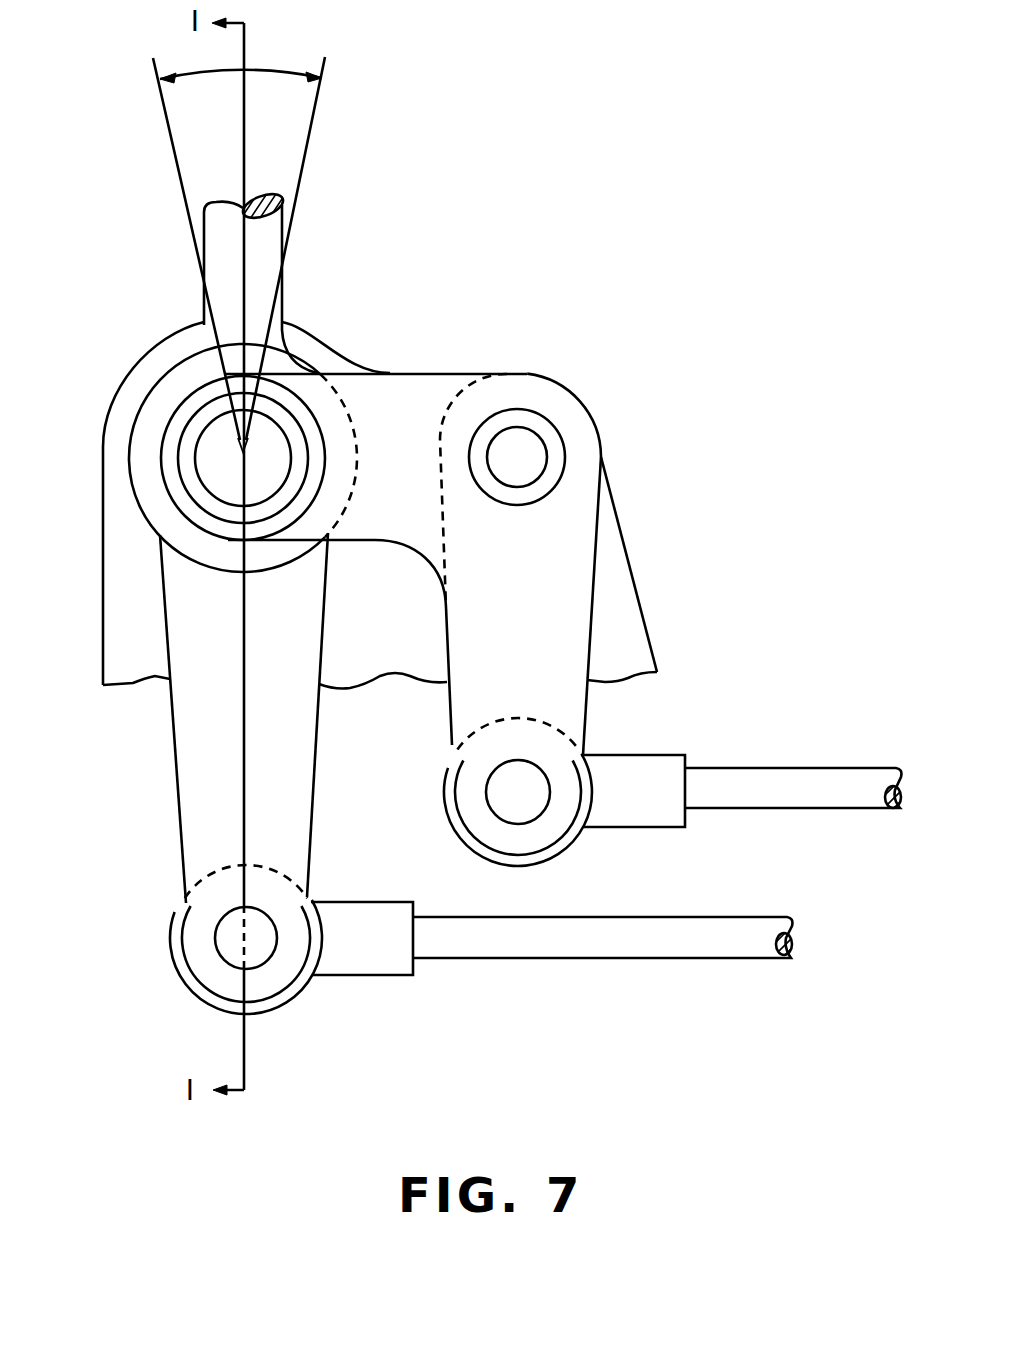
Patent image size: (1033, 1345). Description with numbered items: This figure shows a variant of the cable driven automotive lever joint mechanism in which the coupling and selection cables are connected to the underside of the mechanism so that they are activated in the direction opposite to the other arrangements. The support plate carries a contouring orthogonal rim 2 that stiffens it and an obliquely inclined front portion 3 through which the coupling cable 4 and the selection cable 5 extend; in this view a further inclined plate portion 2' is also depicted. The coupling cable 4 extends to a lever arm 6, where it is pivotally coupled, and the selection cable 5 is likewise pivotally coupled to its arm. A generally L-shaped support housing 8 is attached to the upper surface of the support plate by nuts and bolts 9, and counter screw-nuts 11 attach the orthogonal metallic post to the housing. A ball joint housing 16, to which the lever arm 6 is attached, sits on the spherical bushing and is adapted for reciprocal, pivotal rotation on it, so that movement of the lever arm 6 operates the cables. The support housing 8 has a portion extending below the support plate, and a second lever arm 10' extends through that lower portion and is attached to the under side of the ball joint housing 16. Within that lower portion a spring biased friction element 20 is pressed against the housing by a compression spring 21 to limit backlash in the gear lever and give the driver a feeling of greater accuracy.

The contouring orthogonal rim 2 is at (368, 505).
The plate 2' is at (608, 523).
The obliquely inclined front portion 3 is at (268, 257).
The coupling cable 4 is at (250, 452).
The selection cable 5 is at (532, 447).
The lever arm 6 is at (558, 697).
The support housing 8 is at (737, 922).
The nuts and bolts 9 is at (845, 772).
The lever 10' is at (209, 773).
The counter screw-nuts 11 is at (265, 67).
The ball joint housing 16 is at (180, 373).
The spring biased friction element 20 is at (213, 477).
The compression spring 21 is at (300, 482).